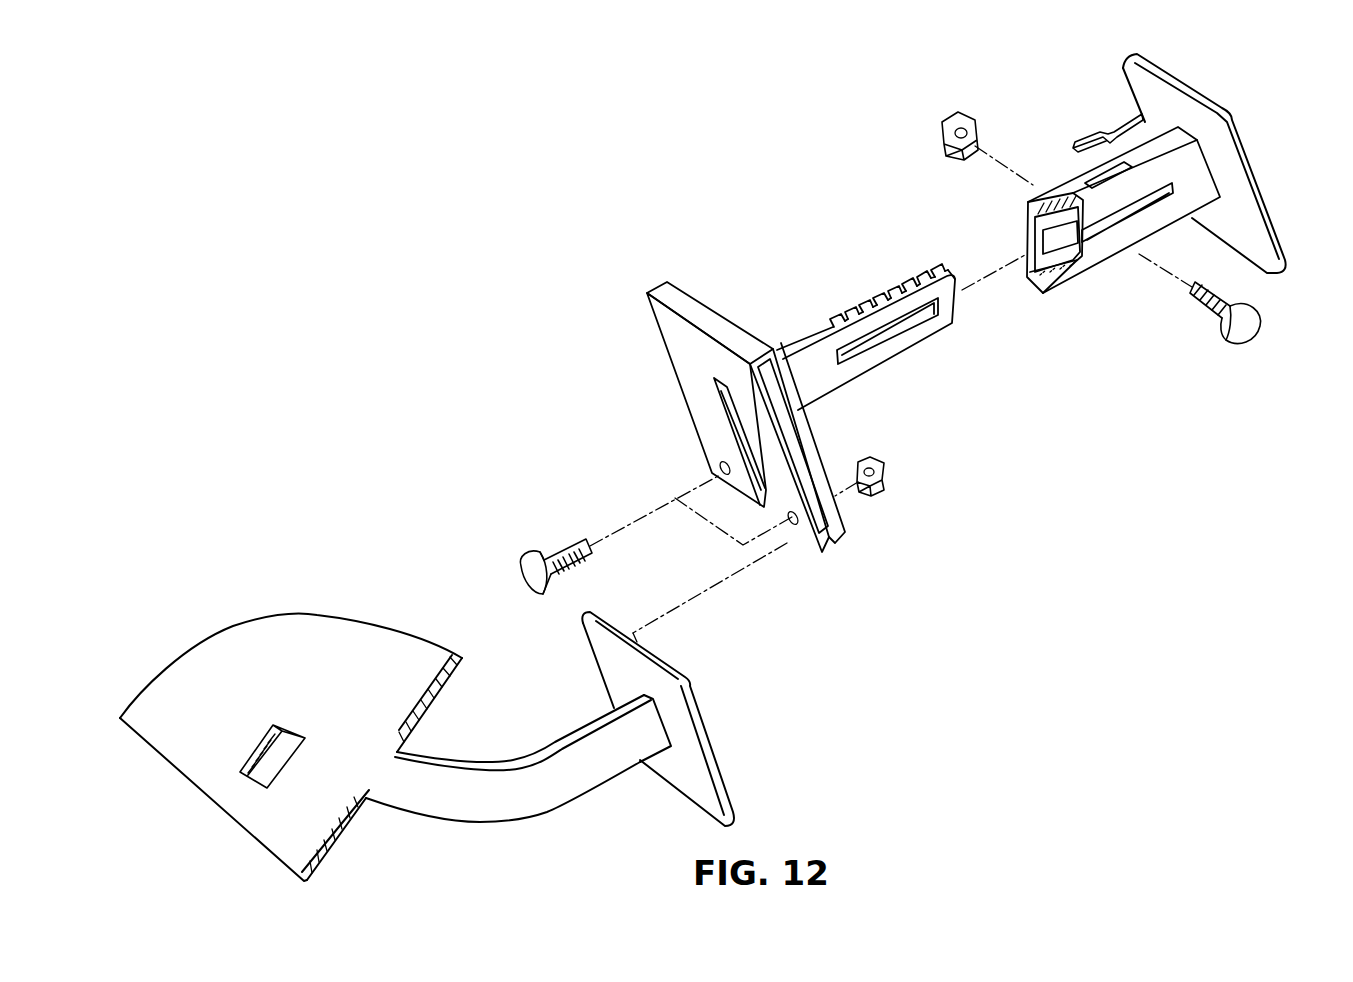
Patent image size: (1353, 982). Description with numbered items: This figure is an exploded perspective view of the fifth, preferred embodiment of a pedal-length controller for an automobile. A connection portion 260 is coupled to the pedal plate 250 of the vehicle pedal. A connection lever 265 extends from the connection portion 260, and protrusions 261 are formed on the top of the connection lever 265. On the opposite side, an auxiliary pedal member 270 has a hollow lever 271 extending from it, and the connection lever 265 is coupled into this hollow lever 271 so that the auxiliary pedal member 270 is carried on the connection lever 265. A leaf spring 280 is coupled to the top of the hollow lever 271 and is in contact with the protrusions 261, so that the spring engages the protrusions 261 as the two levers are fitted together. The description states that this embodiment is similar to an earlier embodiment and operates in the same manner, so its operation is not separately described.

The pedal plate 250 is at (738, 800).
The connection portion 260 is at (634, 275).
The protrusions 261 is at (890, 298).
The connection lever 265 is at (957, 322).
The auxiliary pedal member 270 is at (1255, 127).
The hollow lever 271 is at (1072, 272).
The leaf spring 280 is at (1083, 140).